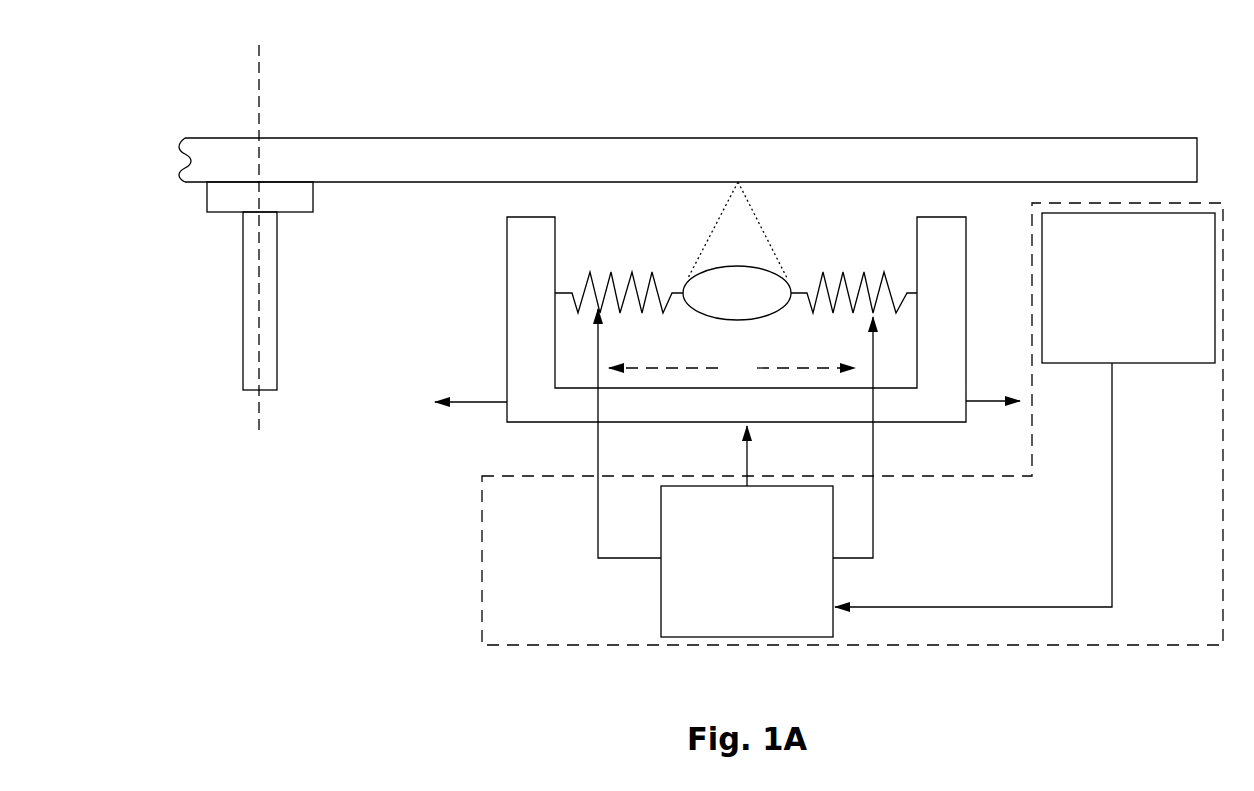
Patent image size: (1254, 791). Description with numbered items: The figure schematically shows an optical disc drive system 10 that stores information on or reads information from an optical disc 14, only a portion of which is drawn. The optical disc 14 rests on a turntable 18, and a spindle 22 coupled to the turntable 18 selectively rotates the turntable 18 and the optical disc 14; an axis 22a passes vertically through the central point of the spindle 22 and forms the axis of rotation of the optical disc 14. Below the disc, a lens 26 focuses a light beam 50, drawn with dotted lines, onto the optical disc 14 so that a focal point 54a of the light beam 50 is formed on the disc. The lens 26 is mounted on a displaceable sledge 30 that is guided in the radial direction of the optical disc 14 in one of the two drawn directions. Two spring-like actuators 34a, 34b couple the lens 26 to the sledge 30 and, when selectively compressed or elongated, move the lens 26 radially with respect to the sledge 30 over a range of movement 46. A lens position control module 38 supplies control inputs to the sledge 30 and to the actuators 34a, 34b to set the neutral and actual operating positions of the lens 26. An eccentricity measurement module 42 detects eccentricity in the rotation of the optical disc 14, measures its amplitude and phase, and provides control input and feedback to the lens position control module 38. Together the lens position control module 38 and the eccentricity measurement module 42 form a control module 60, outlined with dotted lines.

The optical disc drive system 10 is at (104, 60).
The optical disc 14 is at (688, 160).
The turntable 18 is at (206, 197).
The spindle 22 is at (242, 315).
The axis 22a is at (263, 97).
The lens 26 is at (737, 293).
The sledge 30 is at (727, 319).
The lens actuator 34a is at (590, 268).
The lens actuator 34b is at (885, 271).
The lens position control module 38 is at (735, 473).
The eccentricity measurement module 42 is at (1025, 410).
The range of movement of the lens 46 is at (732, 367).
The light beam 50 is at (718, 207).
The focal point 54a is at (740, 180).
The control module 60 is at (916, 657).